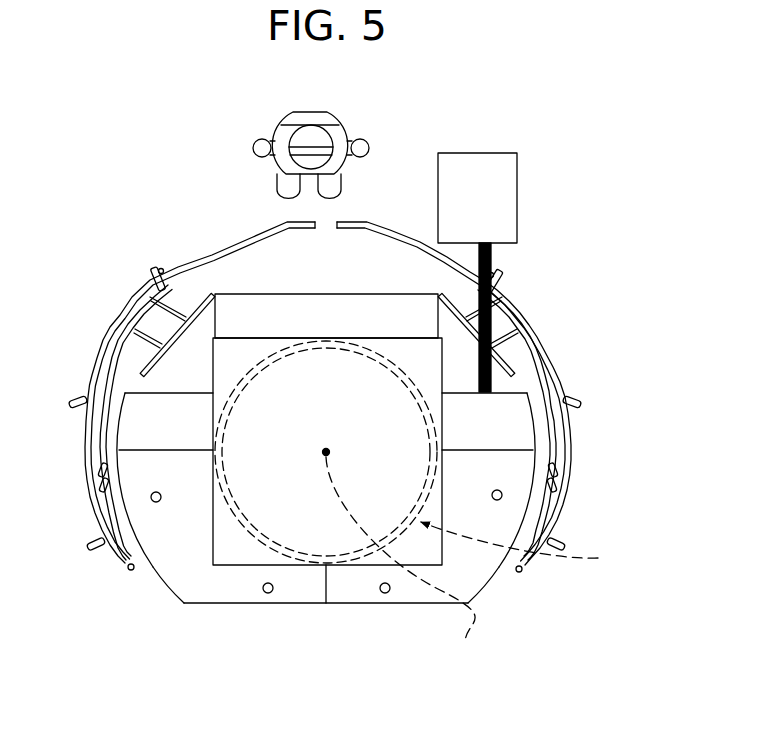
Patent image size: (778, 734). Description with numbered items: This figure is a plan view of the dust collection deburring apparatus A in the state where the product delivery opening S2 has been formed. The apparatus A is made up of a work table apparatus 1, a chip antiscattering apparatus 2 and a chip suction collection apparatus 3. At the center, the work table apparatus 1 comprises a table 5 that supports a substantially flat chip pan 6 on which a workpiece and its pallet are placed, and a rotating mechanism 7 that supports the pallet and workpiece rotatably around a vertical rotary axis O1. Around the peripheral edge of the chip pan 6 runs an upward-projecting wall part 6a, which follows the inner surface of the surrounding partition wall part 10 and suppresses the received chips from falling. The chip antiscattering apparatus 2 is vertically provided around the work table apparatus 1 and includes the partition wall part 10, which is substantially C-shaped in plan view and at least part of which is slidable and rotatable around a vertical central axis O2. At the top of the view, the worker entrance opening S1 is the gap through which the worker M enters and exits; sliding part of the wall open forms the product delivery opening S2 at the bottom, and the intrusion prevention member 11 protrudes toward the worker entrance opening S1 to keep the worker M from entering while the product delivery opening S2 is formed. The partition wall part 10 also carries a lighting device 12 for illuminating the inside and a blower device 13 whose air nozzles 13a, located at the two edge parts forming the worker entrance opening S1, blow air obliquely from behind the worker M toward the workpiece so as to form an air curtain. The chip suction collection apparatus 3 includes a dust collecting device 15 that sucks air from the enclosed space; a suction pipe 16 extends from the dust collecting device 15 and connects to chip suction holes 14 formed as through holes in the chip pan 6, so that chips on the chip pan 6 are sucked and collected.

The work table apparatus 1 is at (350, 612).
The chip antiscattering apparatus 2 is at (575, 433).
The chip suction collection apparatus 3 is at (529, 235).
The table 5 is at (230, 606).
The chip pan 6 is at (344, 534).
The wall part 6a is at (150, 566).
The rotating mechanism 7 is at (517, 547).
The partition wall part 10 is at (107, 357).
The intrusion prevention member 11 is at (203, 256).
The lighting device 12 is at (148, 297).
The blower device 13 is at (352, 249).
The air nozzle 13a is at (156, 270).
The chip suction hole 14 is at (151, 497).
The dust collecting device 15 is at (463, 160).
The suction pipe 16 is at (490, 385).
The worker M is at (336, 110).
The worker entrance opening S1 is at (262, 220).
The product delivery opening S2 is at (305, 626).
The rotary axis O1 is at (412, 564).
The central axis O2 is at (326, 452).
The dust collection deburring apparatus A is at (529, 235).